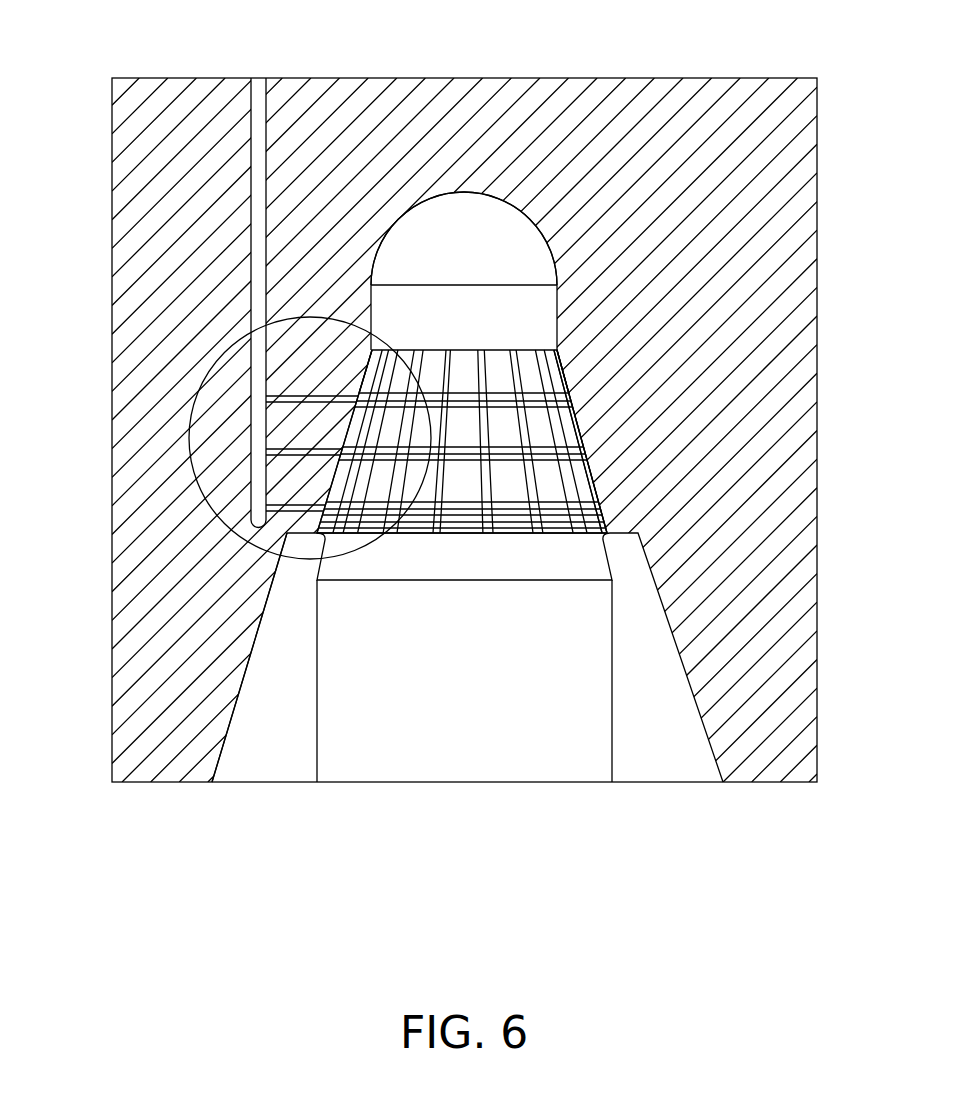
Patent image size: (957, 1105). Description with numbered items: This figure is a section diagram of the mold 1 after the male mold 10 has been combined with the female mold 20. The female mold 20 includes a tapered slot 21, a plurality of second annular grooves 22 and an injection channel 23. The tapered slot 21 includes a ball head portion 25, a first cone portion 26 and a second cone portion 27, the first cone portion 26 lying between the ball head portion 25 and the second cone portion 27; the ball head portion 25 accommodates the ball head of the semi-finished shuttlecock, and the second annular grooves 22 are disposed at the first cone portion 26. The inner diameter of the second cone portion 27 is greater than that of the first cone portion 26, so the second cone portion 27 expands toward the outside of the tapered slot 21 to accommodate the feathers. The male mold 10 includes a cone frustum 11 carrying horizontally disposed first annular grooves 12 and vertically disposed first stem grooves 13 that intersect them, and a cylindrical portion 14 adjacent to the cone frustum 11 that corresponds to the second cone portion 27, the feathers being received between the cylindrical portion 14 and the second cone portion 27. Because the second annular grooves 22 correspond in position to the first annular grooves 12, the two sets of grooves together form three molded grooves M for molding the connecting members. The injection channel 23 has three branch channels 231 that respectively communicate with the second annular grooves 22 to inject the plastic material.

The mold 1 is at (461, 432).
The female mold 20 is at (135, 135).
The injection channel 23 is at (256, 87).
The ball head portion 25 is at (430, 225).
The tapered slot 21 is at (457, 212).
The first stem grooves 13 is at (520, 360).
The cone frustum 11 is at (553, 365).
The second annular grooves 22 is at (565, 393).
The first annular grooves 12 is at (575, 420).
The first cone portion 26 is at (597, 463).
The molded grooves M is at (357, 397).
The branch channels 231 is at (362, 402).
The second cone portion 27 is at (240, 765).
The cylindrical portion 14 is at (483, 768).
The male mold 10 is at (617, 742).